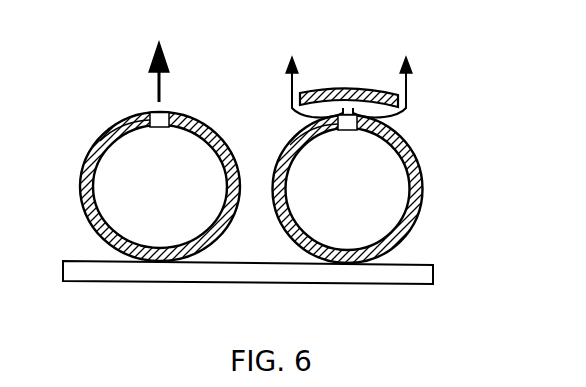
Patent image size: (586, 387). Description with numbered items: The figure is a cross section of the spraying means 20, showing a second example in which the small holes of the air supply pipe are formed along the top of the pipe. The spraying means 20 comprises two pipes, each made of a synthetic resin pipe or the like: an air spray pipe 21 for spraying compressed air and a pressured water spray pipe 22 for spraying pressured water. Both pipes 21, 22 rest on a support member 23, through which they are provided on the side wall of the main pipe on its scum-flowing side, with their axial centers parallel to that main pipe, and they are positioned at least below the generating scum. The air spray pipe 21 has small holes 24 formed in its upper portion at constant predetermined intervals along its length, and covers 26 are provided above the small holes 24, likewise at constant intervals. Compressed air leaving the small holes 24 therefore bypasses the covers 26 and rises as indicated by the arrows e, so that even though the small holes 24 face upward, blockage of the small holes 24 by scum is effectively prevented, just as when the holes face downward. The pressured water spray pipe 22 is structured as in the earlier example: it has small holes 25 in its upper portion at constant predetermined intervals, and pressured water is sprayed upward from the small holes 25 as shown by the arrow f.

The spraying means 20 is at (433, 168).
The air spray pipe 21 is at (420, 195).
The pressured water spray pipe 22 is at (98, 139).
The support member 23 is at (434, 271).
The small holes 24 is at (349, 131).
The small holes 25 is at (160, 128).
The covers 26 is at (347, 88).
The arrow f is at (157, 84).
The arrows e is at (408, 104).